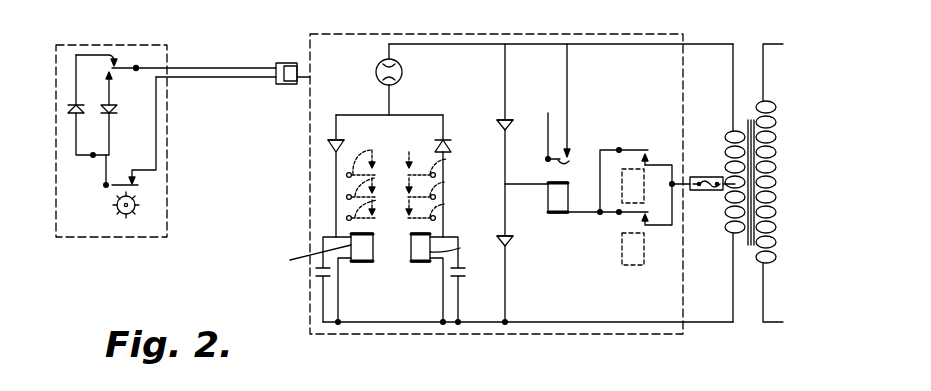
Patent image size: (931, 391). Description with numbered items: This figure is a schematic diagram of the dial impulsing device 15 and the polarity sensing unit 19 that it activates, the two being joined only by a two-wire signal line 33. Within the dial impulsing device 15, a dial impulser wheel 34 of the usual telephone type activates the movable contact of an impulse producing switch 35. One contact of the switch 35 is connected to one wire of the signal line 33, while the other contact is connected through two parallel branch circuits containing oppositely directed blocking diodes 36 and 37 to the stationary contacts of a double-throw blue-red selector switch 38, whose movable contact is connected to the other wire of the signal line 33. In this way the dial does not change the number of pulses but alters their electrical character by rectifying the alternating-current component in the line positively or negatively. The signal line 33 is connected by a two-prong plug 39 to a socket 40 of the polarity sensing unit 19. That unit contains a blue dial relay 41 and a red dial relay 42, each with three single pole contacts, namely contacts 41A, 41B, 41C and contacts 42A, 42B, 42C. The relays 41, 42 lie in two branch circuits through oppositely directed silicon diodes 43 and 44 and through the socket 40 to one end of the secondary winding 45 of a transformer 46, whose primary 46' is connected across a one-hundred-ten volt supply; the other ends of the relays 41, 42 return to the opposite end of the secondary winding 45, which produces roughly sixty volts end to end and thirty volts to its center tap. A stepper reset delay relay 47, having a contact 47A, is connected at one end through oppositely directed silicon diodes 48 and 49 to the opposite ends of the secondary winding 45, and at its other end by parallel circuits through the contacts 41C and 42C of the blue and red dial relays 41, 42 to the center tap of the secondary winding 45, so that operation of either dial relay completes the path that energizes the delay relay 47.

The dial impulsing device 15 is at (104, 238).
The polarity sensing unit 19 is at (418, 337).
The two-wire lead (signal line) 33 is at (222, 64).
The dial impulser wheel 34 is at (117, 206).
The impulse producing switch 35 is at (126, 185).
The blocking diode 36 is at (108, 104).
The blocking diode 37 is at (72, 103).
The blue-red selector switch 38 is at (128, 67).
The two-prong plug 39 is at (284, 62).
The socket 40 is at (376, 72).
The blue dial relay 41 is at (418, 265).
The blue dial relay contact 41A is at (441, 210).
The blue dial relay contact 41B is at (441, 187).
The blue dial relay contact 41C is at (645, 213).
The red dial relay 42 is at (368, 265).
The red dial relay contact 42A is at (376, 210).
The red dial relay contact 42B is at (375, 183).
The red dial relay contact 42C is at (636, 137).
The silicon diode 43 is at (450, 143).
The silicon diode 44 is at (330, 143).
The secondary winding 45 is at (733, 131).
The transformer 46 is at (743, 168).
The primary winding 46' is at (773, 183).
The stepper reset delay relay 47 is at (556, 216).
The stepper reset delay relay contact 47A is at (567, 164).
The silicon diode 48 is at (511, 122).
The silicon diode 49 is at (512, 240).